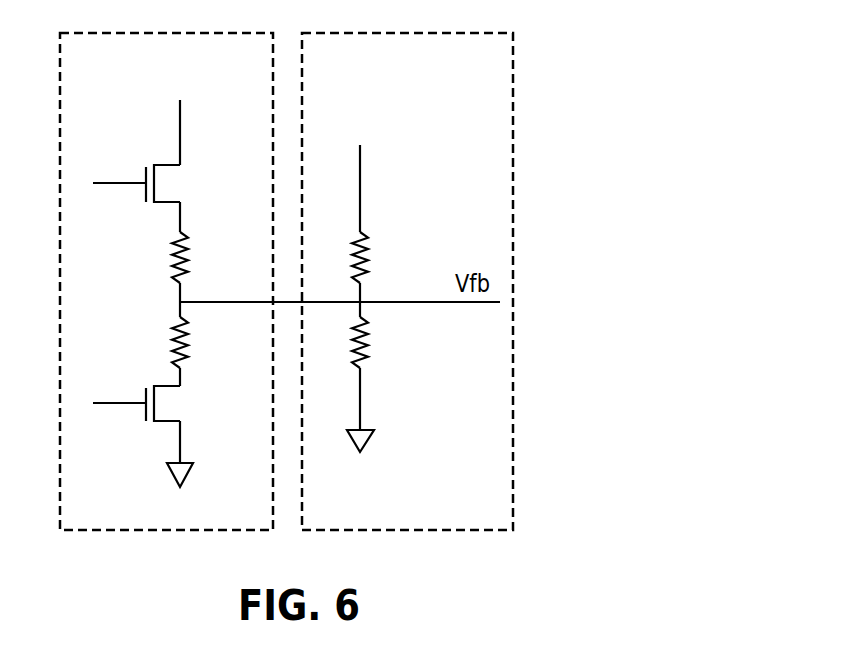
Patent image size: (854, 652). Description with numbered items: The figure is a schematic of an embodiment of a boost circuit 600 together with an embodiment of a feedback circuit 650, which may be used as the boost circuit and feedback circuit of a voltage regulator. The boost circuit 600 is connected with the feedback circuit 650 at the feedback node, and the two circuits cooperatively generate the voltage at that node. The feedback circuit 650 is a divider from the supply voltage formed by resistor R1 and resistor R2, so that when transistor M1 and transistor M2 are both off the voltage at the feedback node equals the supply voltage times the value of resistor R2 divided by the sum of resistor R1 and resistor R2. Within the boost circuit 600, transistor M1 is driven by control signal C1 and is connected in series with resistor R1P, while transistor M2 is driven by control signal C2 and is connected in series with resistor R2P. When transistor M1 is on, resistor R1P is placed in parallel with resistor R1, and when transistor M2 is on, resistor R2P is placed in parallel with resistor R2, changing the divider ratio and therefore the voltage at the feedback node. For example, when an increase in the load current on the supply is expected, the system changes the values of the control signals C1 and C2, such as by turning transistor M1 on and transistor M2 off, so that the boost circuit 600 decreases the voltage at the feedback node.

The boost circuit 600 is at (60, 80).
The feedback circuit 650 is at (513, 80).
The transistor M1 is at (171, 183).
The transistor M2 is at (172, 403).
The control signal C1 is at (114, 168).
The control signal C2 is at (116, 386).
The resistor R1P is at (205, 257).
The resistor R2P is at (205, 343).
The resistor R1 is at (376, 257).
The resistor R2 is at (376, 343).